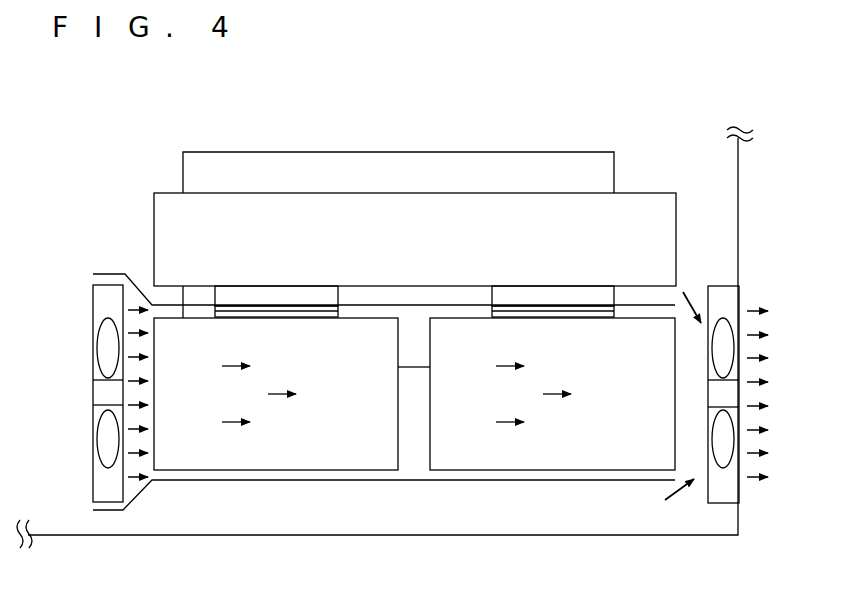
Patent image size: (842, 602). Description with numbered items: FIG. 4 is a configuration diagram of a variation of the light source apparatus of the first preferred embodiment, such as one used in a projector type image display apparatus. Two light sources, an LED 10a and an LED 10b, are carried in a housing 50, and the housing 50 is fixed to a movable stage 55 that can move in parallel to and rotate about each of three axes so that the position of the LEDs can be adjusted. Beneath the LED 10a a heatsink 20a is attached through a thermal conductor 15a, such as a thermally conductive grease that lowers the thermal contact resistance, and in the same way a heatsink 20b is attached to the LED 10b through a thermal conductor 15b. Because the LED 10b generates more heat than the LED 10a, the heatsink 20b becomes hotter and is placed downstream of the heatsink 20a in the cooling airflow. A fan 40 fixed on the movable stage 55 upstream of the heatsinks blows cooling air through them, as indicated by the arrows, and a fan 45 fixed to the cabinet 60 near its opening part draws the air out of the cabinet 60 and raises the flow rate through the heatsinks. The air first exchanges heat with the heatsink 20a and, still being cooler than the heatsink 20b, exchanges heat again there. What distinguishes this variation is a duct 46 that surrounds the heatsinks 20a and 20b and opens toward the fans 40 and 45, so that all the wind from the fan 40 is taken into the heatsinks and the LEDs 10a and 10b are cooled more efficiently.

The LED 10a is at (246, 300).
The LED 10b is at (556, 300).
The thermal conductor 15a is at (310, 318).
The thermal conductor 15b is at (585, 318).
The heatsink 20a is at (275, 471).
The heatsink 20b is at (555, 471).
The fan 40 is at (92, 313).
The fan 45 is at (720, 504).
The duct 46 is at (190, 481).
The housing 50 is at (350, 193).
The movable stage 55 is at (412, 152).
The cabinet 60 is at (741, 517).